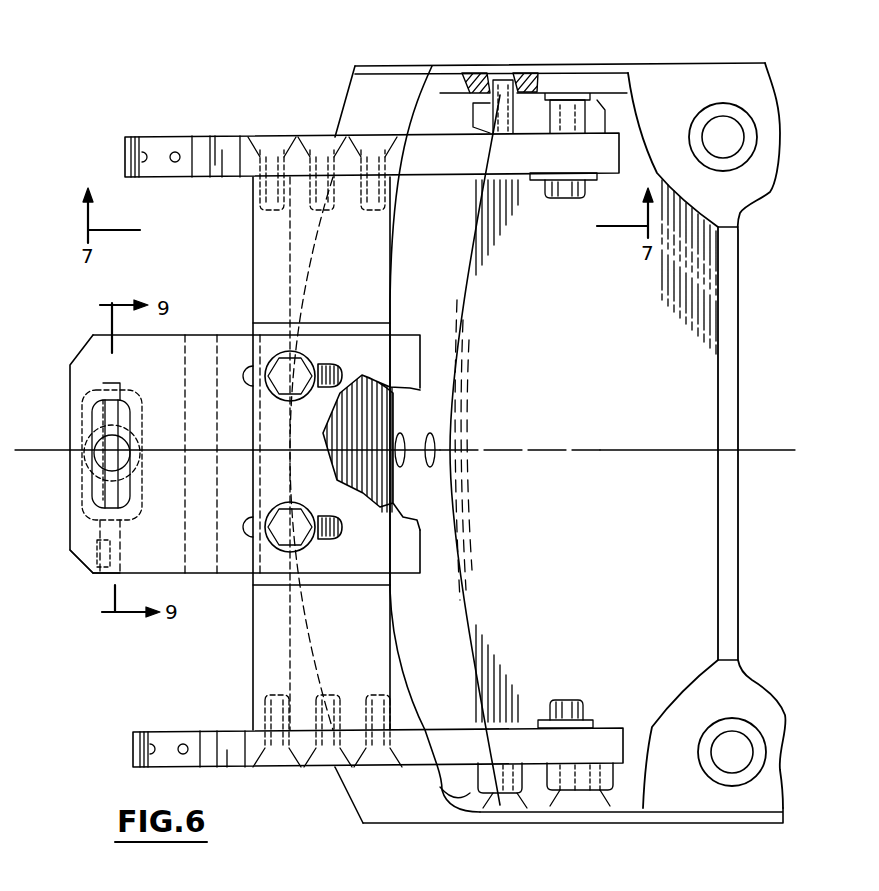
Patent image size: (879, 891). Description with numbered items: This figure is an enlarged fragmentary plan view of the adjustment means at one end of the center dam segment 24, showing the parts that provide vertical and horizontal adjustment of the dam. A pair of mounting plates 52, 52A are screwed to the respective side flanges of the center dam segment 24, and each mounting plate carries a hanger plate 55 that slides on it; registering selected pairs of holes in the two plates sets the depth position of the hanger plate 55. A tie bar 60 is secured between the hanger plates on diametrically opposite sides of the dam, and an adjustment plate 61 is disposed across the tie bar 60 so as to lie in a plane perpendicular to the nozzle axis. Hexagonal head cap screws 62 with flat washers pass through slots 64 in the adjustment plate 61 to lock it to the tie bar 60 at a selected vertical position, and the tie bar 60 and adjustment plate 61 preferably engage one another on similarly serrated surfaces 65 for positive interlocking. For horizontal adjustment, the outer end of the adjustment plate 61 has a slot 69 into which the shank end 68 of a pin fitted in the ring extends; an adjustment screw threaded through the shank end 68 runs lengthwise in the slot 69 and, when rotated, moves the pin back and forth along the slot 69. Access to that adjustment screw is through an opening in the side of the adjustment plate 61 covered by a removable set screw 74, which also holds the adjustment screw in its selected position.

The center dam segment 24 is at (623, 390).
The mounting plate 52 is at (473, 122).
The mounting plate 52A is at (490, 785).
The hanger plate 55 is at (163, 147).
The tie bar 60 is at (377, 258).
The adjustment plate 61 is at (97, 367).
The hexagonal head cap screw 62 is at (337, 372).
The slot 64 is at (318, 352).
The serrated surface 65 is at (388, 415).
The shank end 68 is at (93, 470).
The slot 69 is at (90, 427).
The set screw 74 is at (100, 576).